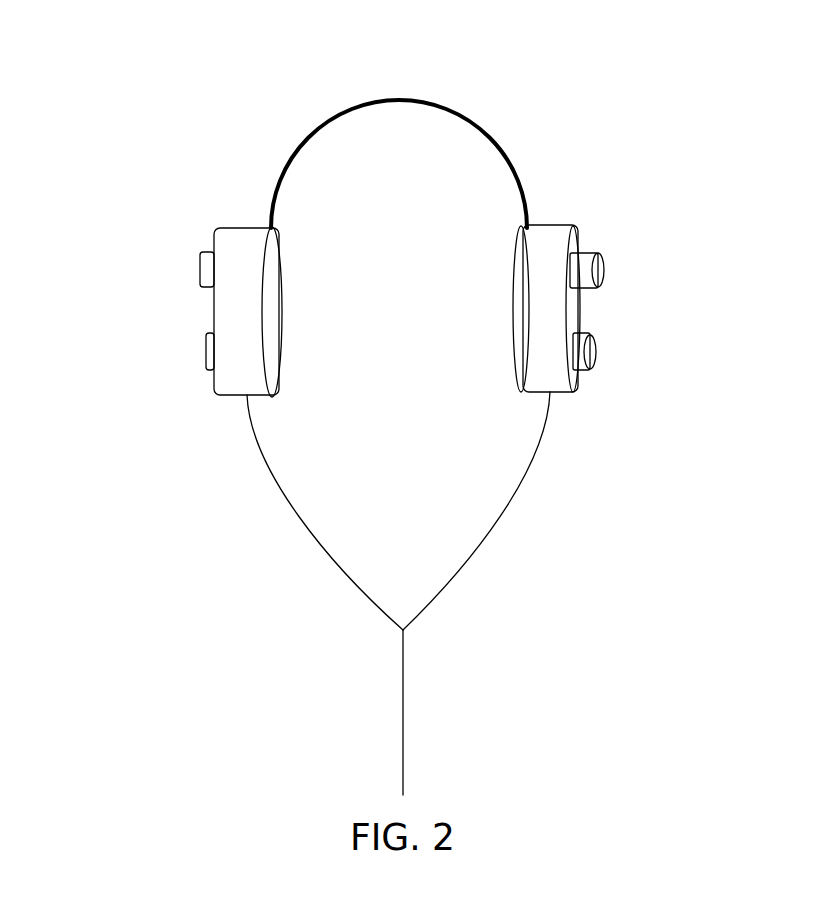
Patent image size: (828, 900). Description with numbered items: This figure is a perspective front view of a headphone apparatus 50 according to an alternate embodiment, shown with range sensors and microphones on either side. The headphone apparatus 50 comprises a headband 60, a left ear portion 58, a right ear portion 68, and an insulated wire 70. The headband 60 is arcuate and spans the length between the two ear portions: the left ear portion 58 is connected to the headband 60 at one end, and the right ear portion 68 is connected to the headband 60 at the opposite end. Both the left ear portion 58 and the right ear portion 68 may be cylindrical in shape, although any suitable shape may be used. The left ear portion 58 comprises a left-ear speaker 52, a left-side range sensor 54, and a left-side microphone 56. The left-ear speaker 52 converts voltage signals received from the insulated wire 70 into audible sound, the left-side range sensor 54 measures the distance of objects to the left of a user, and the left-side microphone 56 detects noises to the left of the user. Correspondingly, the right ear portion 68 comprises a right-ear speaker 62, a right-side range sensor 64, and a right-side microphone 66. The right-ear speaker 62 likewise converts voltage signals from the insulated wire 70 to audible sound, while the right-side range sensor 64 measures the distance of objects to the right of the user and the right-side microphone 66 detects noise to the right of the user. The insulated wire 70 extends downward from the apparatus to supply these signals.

The headphone apparatus 50 is at (180, 115).
The left-ear speaker 52 is at (518, 255).
The left-side range sensor 54 is at (583, 253).
The left-side microphone 56 is at (588, 365).
The left ear portion 58 is at (542, 373).
The headband 60 is at (378, 102).
The right-ear speaker 62 is at (270, 278).
The right-side range sensor 64 is at (200, 255).
The right-side microphone 66 is at (207, 365).
The right ear portion 68 is at (253, 372).
The insulated wire 70 is at (403, 630).